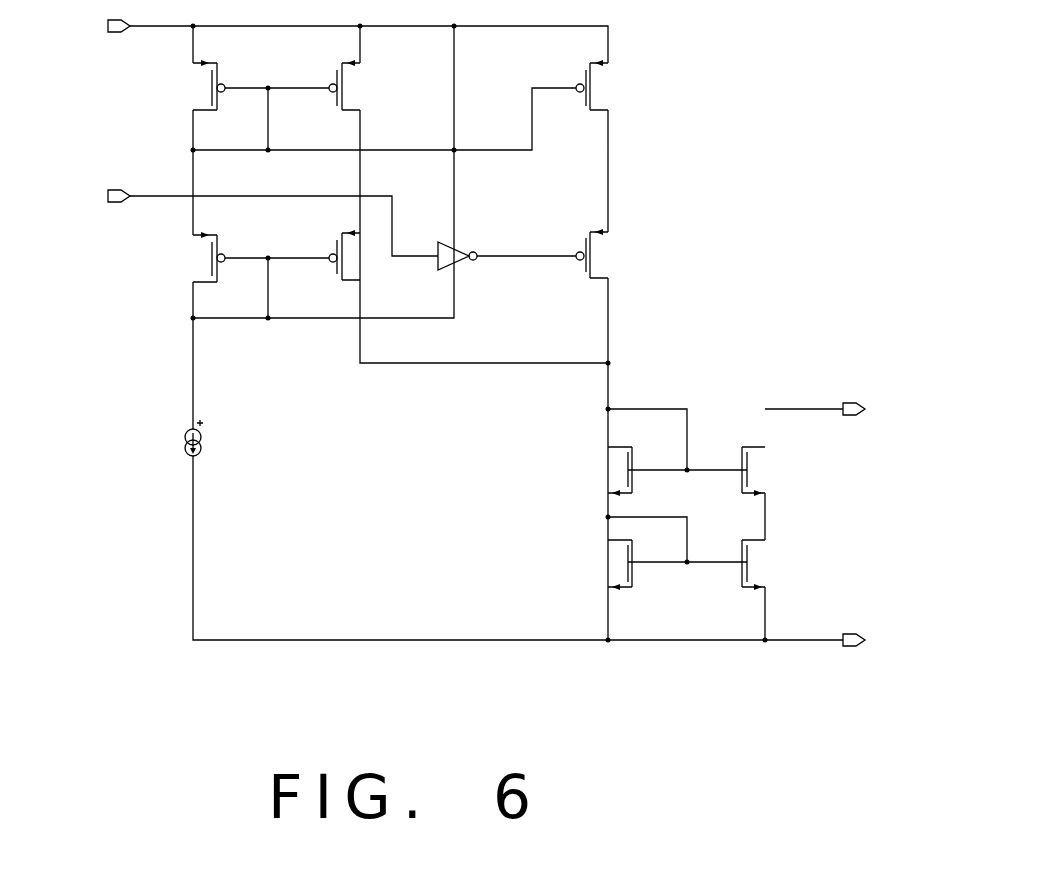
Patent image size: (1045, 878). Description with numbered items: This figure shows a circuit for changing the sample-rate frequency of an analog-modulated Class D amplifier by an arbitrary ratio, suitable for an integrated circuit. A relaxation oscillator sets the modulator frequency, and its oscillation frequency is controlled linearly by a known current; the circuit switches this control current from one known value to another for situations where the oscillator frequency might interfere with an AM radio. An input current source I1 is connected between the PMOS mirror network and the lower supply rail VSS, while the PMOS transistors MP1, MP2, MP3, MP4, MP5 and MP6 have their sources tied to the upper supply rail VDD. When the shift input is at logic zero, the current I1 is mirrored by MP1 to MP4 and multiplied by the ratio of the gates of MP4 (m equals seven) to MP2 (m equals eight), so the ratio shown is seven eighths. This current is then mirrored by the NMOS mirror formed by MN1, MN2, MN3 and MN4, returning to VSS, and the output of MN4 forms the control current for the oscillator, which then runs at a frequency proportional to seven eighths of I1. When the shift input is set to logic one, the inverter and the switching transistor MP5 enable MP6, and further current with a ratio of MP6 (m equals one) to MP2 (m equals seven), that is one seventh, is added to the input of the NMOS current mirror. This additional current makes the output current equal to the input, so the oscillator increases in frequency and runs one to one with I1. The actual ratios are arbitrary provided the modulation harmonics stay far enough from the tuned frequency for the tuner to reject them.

The PMOS mirror input transistor MP1 is at (261, 253).
The PMOS mirror reference transistor MP2 is at (261, 81).
The PMOS transistor MP3 is at (337, 250).
The PMOS mirror output transistor MP4 is at (375, 82).
The PMOS switching transistor MP5 is at (580, 247).
The PMOS additional-current transistor MP6 is at (526, 55).
The NMOS mirror input transistor MN1 is at (677, 462).
The NMOS mirror transistor MN2 is at (677, 559).
The NMOS mirror transistor MN3 is at (739, 461).
The NMOS mirror output transistor MN4 is at (737, 559).
The input current source I1 is at (155, 423).
The positive supply terminal VDD is at (103, 27).
The negative supply terminal VSS is at (869, 641).